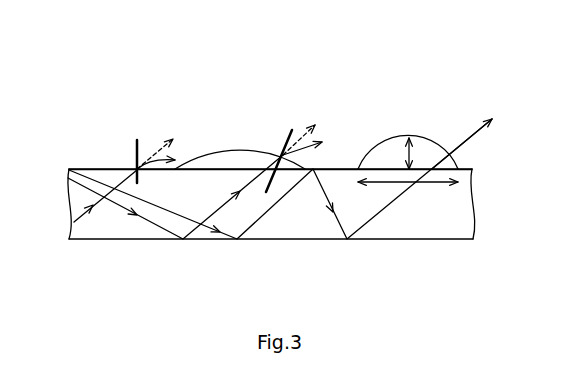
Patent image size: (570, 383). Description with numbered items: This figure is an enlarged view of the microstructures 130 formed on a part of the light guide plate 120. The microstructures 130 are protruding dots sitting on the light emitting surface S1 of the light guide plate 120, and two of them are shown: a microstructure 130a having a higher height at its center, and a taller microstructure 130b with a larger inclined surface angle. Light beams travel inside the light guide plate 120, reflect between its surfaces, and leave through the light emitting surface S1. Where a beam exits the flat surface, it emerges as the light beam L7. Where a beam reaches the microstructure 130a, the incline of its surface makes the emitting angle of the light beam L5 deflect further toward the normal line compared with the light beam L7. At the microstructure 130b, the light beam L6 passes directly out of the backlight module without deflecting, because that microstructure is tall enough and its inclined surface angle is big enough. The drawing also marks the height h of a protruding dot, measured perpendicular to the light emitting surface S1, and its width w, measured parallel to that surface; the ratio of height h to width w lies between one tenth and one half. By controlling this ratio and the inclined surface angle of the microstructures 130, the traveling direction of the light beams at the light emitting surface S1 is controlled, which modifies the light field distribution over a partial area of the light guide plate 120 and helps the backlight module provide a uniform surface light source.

The light guide plate 120 is at (457, 212).
The light emitting surface S1 is at (89, 159).
The microstructures 130 is at (316, 96).
The microstructure having a higher height at the central 130a is at (242, 160).
The microstructure 130b is at (404, 111).
The height of the protruding dots h is at (400, 153).
The width of the protruding dots w is at (408, 190).
The light beam L7 is at (172, 154).
The light beam L5 is at (309, 143).
The light beam L6 is at (477, 131).